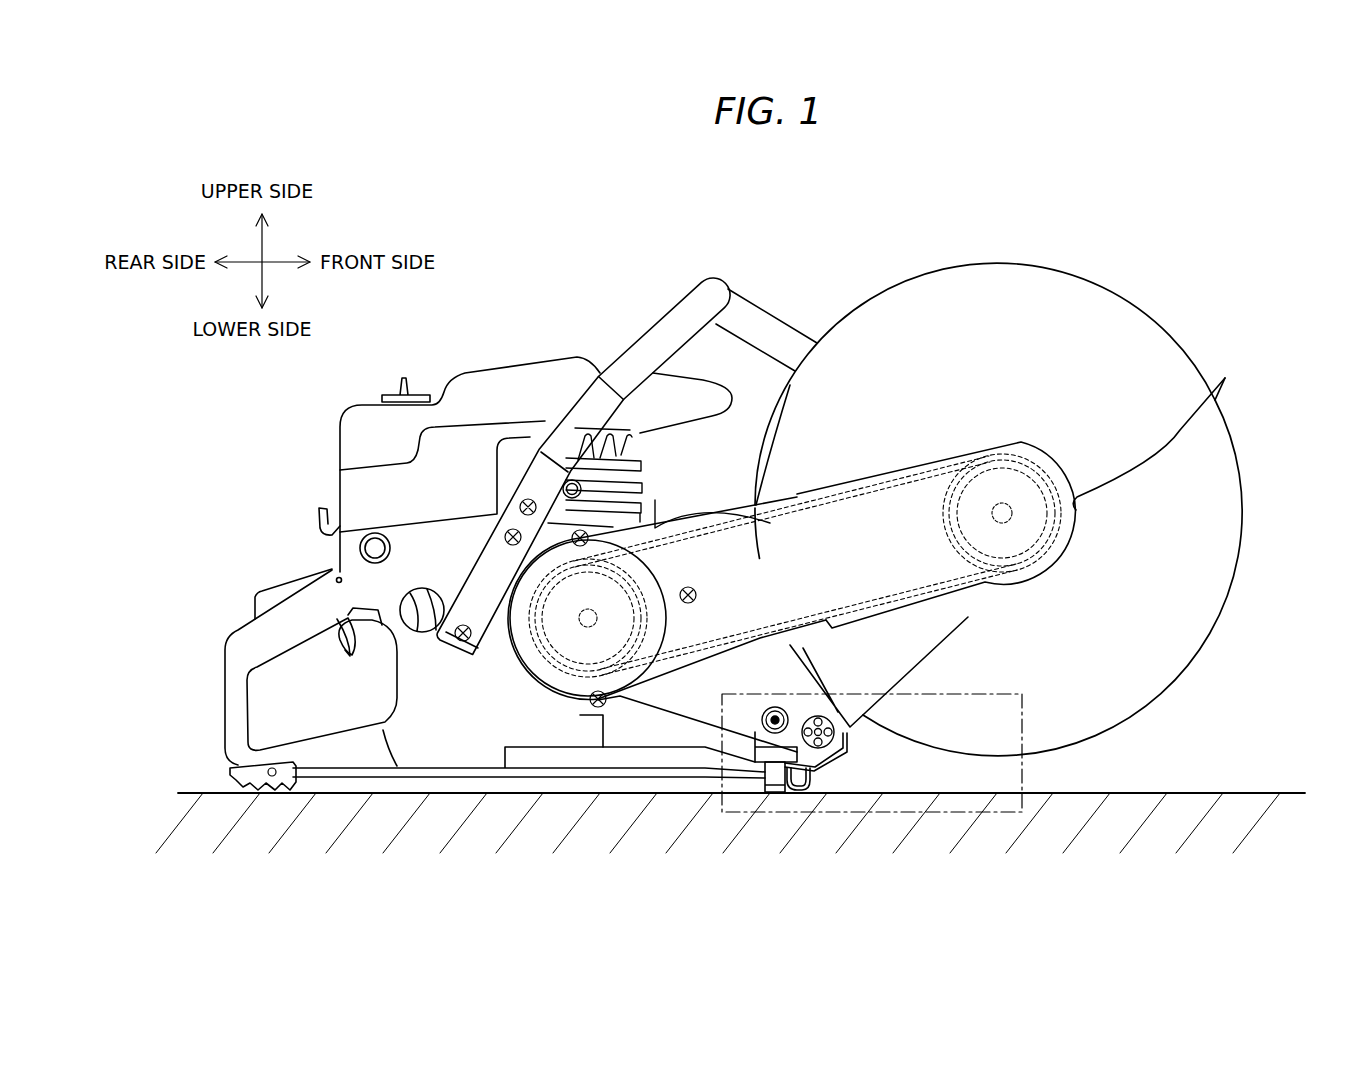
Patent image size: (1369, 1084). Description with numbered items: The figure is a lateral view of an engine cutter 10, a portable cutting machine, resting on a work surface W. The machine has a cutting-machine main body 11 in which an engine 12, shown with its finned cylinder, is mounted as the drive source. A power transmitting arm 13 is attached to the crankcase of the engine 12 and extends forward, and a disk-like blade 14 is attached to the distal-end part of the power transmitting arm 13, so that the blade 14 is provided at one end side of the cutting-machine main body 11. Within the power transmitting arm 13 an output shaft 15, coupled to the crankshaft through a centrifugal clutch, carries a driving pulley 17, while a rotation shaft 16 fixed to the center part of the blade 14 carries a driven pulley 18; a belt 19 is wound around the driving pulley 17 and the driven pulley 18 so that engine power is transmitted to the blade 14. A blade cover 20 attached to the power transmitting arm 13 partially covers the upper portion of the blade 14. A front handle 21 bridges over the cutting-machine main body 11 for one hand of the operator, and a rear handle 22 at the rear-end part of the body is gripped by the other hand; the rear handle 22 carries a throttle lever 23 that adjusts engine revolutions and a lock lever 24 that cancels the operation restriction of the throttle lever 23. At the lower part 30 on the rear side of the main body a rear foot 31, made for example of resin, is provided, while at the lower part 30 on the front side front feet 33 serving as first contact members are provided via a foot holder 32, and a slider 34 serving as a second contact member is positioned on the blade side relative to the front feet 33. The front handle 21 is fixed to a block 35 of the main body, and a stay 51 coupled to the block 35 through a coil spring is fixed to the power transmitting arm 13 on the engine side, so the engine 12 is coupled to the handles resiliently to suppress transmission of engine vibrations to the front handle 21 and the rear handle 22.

The engine cutter 10 is at (1157, 221).
The cutting-machine main body 11 is at (512, 346).
The engine 12 is at (640, 481).
The power transmitting arm 13 is at (866, 455).
The blade 14 is at (1212, 608).
The output shaft 15 is at (560, 653).
The rotation shaft 16 is at (1008, 525).
The driving pulley 17 is at (638, 697).
The driven pulley 18 is at (960, 580).
The belt 19 is at (930, 470).
The blade cover 20 is at (1160, 335).
The front handle 21 is at (690, 286).
The rear handle 22 is at (233, 640).
The throttle lever 23 is at (343, 652).
The lock lever 24 is at (285, 580).
The lower part 30 is at (535, 772).
The rear foot 31 is at (230, 774).
The foot holder 32 is at (760, 777).
The front feet 33 is at (777, 794).
The slider 34 is at (800, 791).
The block 35 is at (800, 757).
The stay 51 is at (757, 672).
The workpiece / work surface W is at (1210, 790).